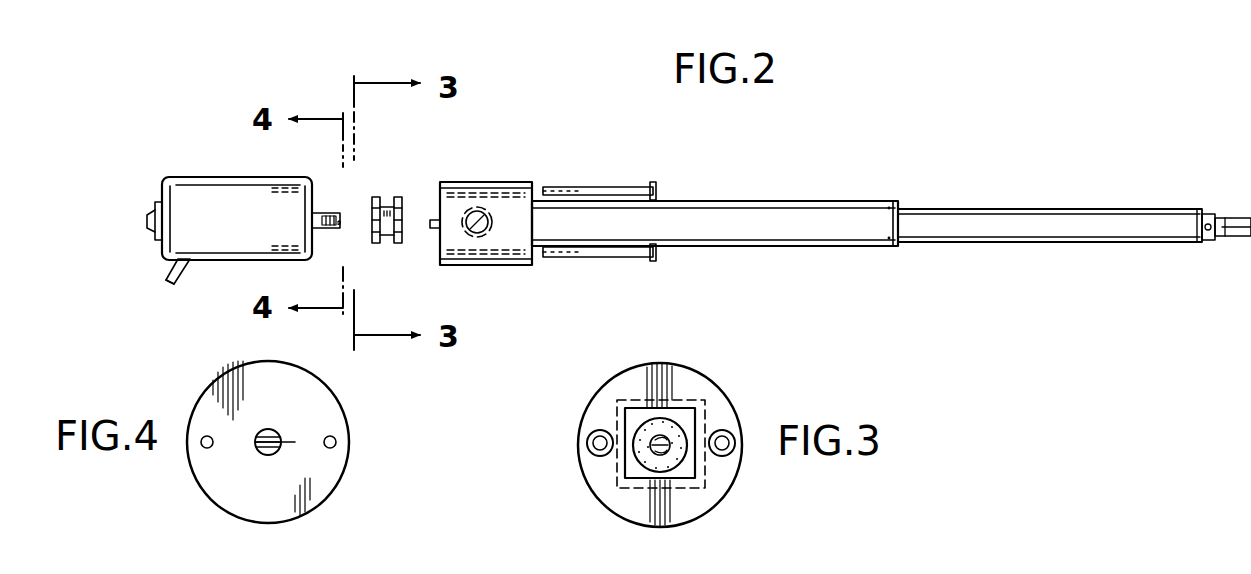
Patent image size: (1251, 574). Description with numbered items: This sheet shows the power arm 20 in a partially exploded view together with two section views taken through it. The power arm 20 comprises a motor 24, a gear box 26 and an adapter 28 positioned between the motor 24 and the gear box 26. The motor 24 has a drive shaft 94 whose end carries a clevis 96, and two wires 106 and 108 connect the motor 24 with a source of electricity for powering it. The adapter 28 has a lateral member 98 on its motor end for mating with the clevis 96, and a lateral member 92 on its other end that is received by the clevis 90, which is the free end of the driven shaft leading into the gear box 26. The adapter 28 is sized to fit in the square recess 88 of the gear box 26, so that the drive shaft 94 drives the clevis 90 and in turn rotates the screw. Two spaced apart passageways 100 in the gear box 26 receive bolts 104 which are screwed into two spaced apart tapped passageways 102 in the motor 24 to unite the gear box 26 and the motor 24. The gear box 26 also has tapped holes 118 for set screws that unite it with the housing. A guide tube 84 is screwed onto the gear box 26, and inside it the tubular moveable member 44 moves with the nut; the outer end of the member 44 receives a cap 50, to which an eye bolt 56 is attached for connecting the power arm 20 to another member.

In FIG. 2, the power arm 20 is at (1017, 248).
In FIG. 2, the motor 24 is at (246, 227).
In FIG. 4, the motor 24 is at (258, 490).
In FIG. 2, the gear box 26 is at (500, 180).
In FIG. 3, the gear box 26 is at (690, 522).
In FIG. 2, the adapter 28 is at (396, 197).
In FIG. 3, the adapter 28 is at (670, 436).
In FIG. 2, the tubular moveable member 44 is at (1050, 228).
In FIG. 2, the cap 50 is at (1204, 213).
In FIG. 2, the eye bolt 56 is at (1228, 242).
In FIG. 2, the guide tube 84 is at (750, 222).
In FIG. 3, the recess 88 is at (690, 420).
In FIG. 2, the clevis 90 is at (430, 226).
In FIG. 3, the lateral member 92 is at (612, 388).
In FIG. 2, the drive shaft 94 is at (325, 210).
In FIG. 4, the drive shaft 94 is at (288, 441).
In FIG. 2, the clevis 96 is at (342, 222).
In FIG. 4, the clevis 96 is at (258, 441).
In FIG. 3, the lateral member 98 is at (720, 480).
In FIG. 2, the passageways 100 is at (475, 185).
In FIG. 3, the passageways 100 is at (598, 445).
In FIG. 2, the tapped passageways 102 is at (283, 219).
In FIG. 4, the tapped passageways 102 is at (338, 421).
In FIG. 2, the bolts 104 is at (650, 184).
In FIG. 2, the wire 106 is at (158, 283).
In FIG. 2, the wire 108 is at (170, 284).
In FIG. 2, the tapped holes 118 is at (503, 223).